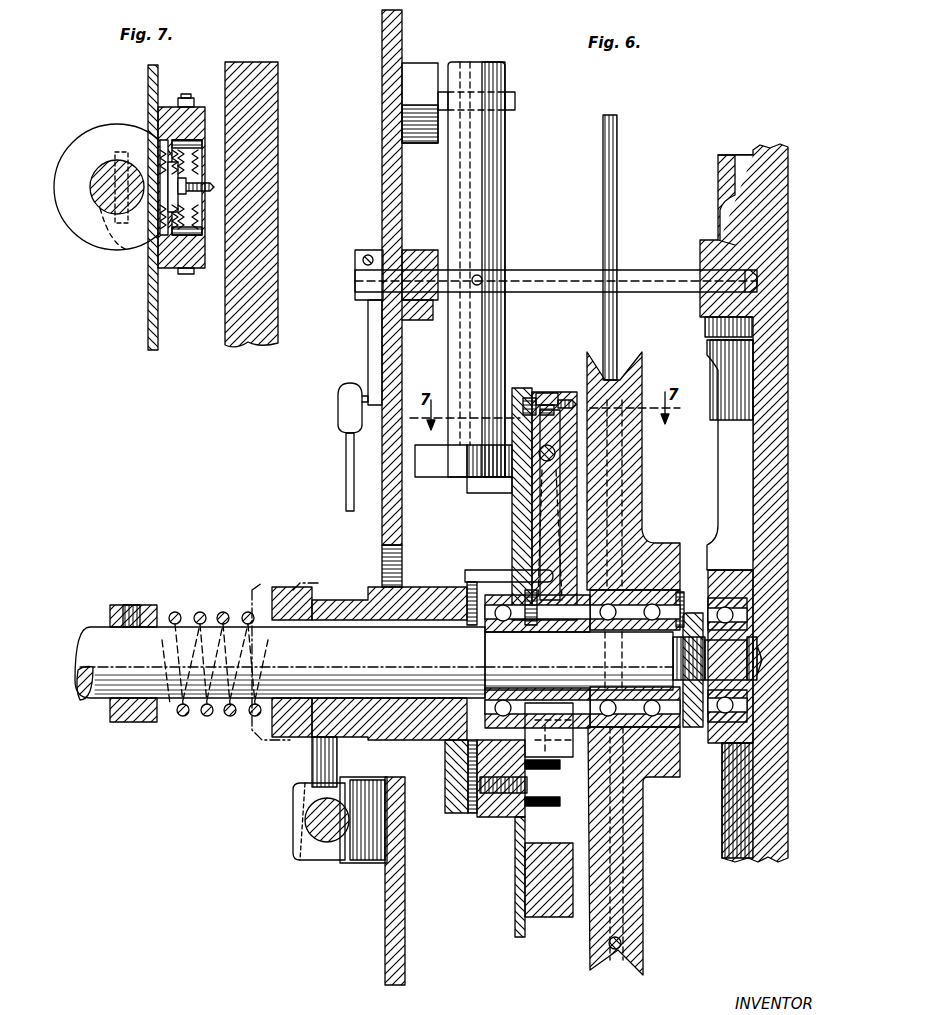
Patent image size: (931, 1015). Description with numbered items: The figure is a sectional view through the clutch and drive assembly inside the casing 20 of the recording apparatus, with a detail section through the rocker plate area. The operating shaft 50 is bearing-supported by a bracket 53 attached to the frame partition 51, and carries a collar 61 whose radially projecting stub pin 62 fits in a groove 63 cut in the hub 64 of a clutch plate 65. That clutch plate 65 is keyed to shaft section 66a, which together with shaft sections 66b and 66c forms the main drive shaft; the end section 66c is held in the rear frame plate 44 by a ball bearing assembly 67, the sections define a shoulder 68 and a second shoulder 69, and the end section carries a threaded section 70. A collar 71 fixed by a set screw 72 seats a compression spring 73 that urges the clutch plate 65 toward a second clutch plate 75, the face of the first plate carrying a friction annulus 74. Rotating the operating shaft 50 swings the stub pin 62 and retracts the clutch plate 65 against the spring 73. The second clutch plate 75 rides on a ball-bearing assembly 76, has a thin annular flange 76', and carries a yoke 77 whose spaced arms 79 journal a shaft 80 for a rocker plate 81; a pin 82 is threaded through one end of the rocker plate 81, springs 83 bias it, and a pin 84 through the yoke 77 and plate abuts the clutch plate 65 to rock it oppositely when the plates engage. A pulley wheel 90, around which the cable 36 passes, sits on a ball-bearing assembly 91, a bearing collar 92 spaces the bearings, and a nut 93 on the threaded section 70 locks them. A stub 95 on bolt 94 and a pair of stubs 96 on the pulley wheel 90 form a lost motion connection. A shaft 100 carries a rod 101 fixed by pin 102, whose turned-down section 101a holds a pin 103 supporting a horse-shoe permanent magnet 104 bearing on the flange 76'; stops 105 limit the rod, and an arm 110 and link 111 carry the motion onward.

In FIG. 6, the casing 20 is at (788, 565).
In FIG. 6, the cable 36 is at (617, 156).
In FIG. 6, the rear frame plate 44 is at (788, 455).
In FIG. 6, the shaft 50 is at (298, 838).
In FIG. 6, the frame partition 51 is at (382, 525).
In FIG. 6, the bracket 53 is at (360, 863).
In FIG. 6, the collar 61 is at (305, 810).
In FIG. 6, the stub pin 62 is at (312, 770).
In FIG. 6, the groove 63 is at (312, 595).
In FIG. 6, the hub 64 is at (290, 587).
In FIG. 6, the clutch plate 65 is at (458, 813).
In FIG. 6, the shaft section 66a is at (95, 627).
In FIG. 6, the shaft section 66b is at (575, 661).
In FIG. 6, the shaft section 66c is at (762, 658).
In FIG. 6, the ball bearing assembly 67 is at (748, 627).
In FIG. 6, the shoulder 68 is at (488, 665).
In FIG. 6, the second shoulder 69 is at (673, 650).
In FIG. 6, the threaded section 70 is at (708, 657).
In FIG. 6, the collar 71 is at (125, 722).
In FIG. 6, the set screw 72 is at (132, 605).
In FIG. 6, the compression spring 73 is at (200, 612).
In FIG. 6, the annulus 74 is at (472, 813).
In FIG. 6, the second clutch plate 75 is at (497, 817).
In FIG. 7, the ball-bearing assembly 76 is at (135, 207).
In FIG. 6, the ball-bearing assembly 76 is at (506, 662).
In FIG. 6, the annular flange 76' is at (517, 661).
In FIG. 6, the yoke 77 is at (545, 917).
In FIG. 7, the arms 79 is at (165, 107).
In FIG. 6, the arms 79 is at (554, 506).
In FIG. 7, the shaft 80 is at (186, 98).
In FIG. 6, the shaft 80 is at (555, 452).
In FIG. 7, the rocker plate 81 is at (205, 140).
In FIG. 6, the rocker plate 81 is at (552, 393).
In FIG. 7, the pin 82 is at (215, 187).
In FIG. 6, the pin 82 is at (576, 398).
In FIG. 7, the springs 83 is at (160, 160).
In FIG. 6, the springs 83 is at (530, 398).
In FIG. 6, the pin 84 is at (465, 575).
In FIG. 7, the pulley wheel 90 is at (278, 200).
In FIG. 6, the pulley wheel 90 is at (642, 490).
In FIG. 6, the ball-bearing assembly 91 is at (680, 600).
In FIG. 6, the bearing collar 92 is at (587, 630).
In FIG. 6, the nut 93 is at (690, 727).
In FIG. 6, the bolt 94 is at (535, 806).
In FIG. 6, the stub 95 is at (562, 806).
In FIG. 6, the stubs 96 is at (560, 735).
In FIG. 6, the shaft 100 is at (572, 270).
In FIG. 7, the rod 101 is at (100, 170).
In FIG. 6, the rod 101 is at (505, 212).
In FIG. 7, the turned-down section 101a is at (115, 205).
In FIG. 6, the turned-down section 101a is at (475, 483).
In FIG. 6, the pin 102 is at (482, 278).
In FIG. 7, the pin 103 is at (110, 235).
In FIG. 6, the pin 103 is at (489, 493).
In FIG. 7, the permanent magnet 104 is at (112, 130).
In FIG. 6, the permanent magnet 104 is at (435, 477).
In FIG. 6, the stops 105 is at (515, 100).
In FIG. 6, the arm 110 is at (368, 322).
In FIG. 6, the link 111 is at (346, 460).